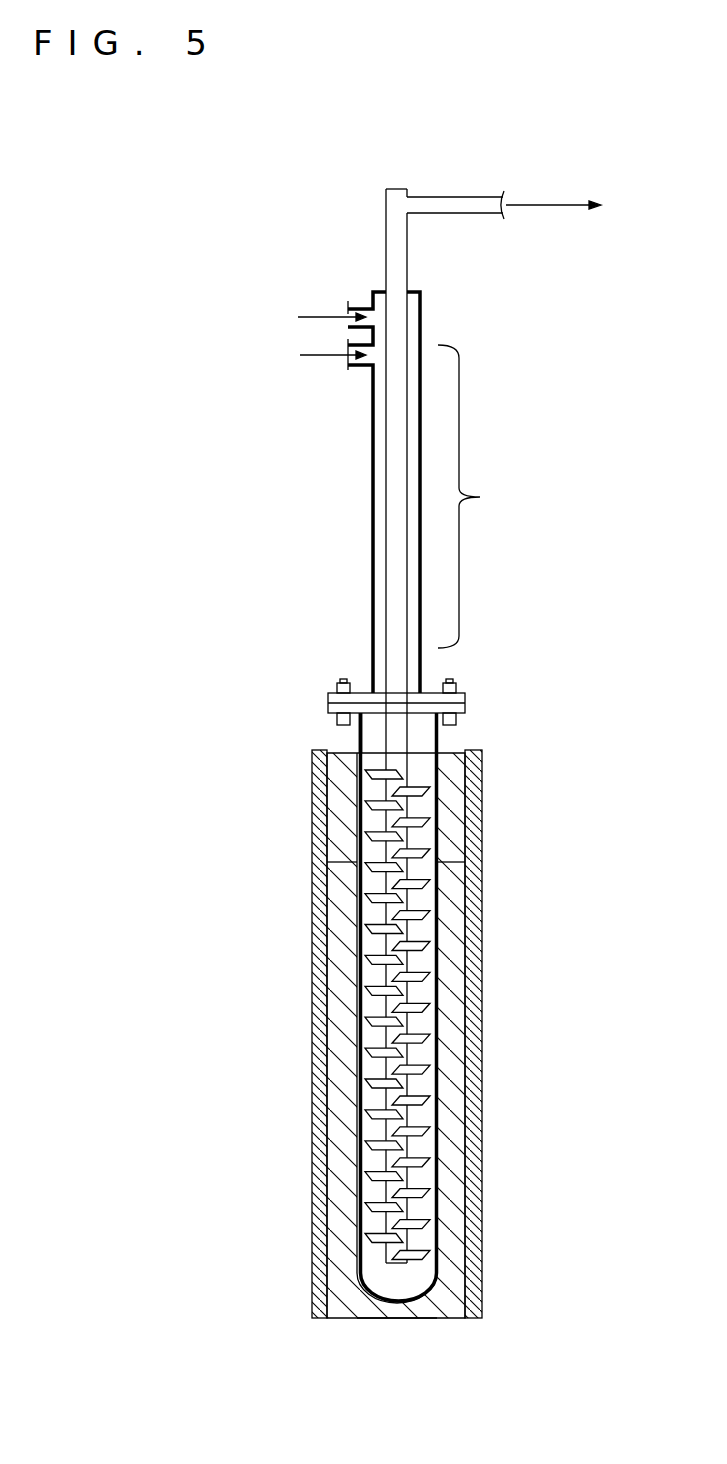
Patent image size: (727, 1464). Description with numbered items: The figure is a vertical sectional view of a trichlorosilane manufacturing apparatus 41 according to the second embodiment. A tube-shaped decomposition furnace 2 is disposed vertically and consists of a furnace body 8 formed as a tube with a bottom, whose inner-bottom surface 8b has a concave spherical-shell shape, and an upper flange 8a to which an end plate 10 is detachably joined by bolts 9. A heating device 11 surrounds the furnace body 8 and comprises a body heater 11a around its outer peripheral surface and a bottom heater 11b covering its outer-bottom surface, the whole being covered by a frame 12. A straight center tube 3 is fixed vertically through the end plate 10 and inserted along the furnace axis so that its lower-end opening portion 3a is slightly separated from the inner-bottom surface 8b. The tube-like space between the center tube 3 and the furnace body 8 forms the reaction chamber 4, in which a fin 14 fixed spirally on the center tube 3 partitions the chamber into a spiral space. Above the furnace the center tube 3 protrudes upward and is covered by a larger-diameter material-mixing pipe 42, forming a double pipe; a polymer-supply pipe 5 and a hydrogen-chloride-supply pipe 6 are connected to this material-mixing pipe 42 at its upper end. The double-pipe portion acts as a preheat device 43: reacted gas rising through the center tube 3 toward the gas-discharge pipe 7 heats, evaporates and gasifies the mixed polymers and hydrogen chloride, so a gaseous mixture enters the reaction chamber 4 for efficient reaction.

The decomposition furnace 2 is at (397, 1034).
The center tube 3 is at (456, 779).
The lower-end opening portion 3a is at (400, 1264).
The reaction chamber 4 is at (428, 1015).
The polymer-supply pipe 5 is at (313, 355).
The hydrogen-chloride-supply pipe 6 is at (313, 317).
The gas-discharge pipe 7 is at (465, 197).
The furnace body 8 is at (393, 1027).
The upper flange 8a is at (328, 708).
The inner-bottom surface 8b is at (375, 1297).
The bolts 9 is at (340, 683).
The end plate 10 is at (465, 698).
The heating device 11 is at (388, 1035).
The body heater 11a is at (345, 915).
The bottom heater 11b is at (425, 1302).
The frame 12 is at (472, 1092).
The fin 14 is at (363, 1050).
The trichlorosilane manufacturing apparatus 41 is at (435, 738).
The material-mixing pipe 42 is at (341, 467).
The preheat device 43 is at (479, 496).